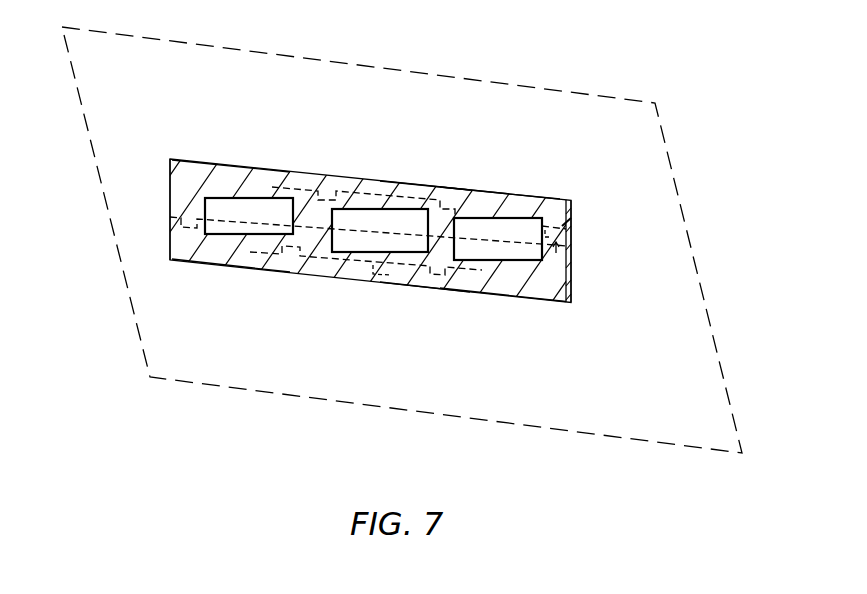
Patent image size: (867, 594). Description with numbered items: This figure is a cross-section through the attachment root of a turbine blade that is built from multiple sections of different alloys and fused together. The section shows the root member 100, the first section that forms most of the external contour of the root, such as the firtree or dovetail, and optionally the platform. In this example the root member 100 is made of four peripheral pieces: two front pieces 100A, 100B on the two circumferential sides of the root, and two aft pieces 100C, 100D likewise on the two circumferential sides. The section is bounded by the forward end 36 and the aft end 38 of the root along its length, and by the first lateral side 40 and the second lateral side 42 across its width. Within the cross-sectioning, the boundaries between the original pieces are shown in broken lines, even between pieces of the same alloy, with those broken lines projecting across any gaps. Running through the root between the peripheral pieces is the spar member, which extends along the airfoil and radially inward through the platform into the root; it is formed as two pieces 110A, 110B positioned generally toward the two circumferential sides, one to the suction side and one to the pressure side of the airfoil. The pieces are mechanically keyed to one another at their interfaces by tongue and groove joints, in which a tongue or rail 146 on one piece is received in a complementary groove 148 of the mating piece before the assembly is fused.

The root member 100 is at (546, 203).
The front piece 100A is at (217, 164).
The front piece 100B is at (230, 252).
The aft piece 100C is at (507, 205).
The aft piece 100D is at (538, 290).
The spar member piece 110A is at (410, 197).
The spar member piece 110B is at (337, 273).
The first lateral side 40 is at (447, 200).
The second lateral side 42 is at (475, 292).
The forward end 36 is at (170, 237).
The aft end 38 is at (572, 262).
The tongue 146 is at (568, 220).
The groove 148 is at (572, 270).